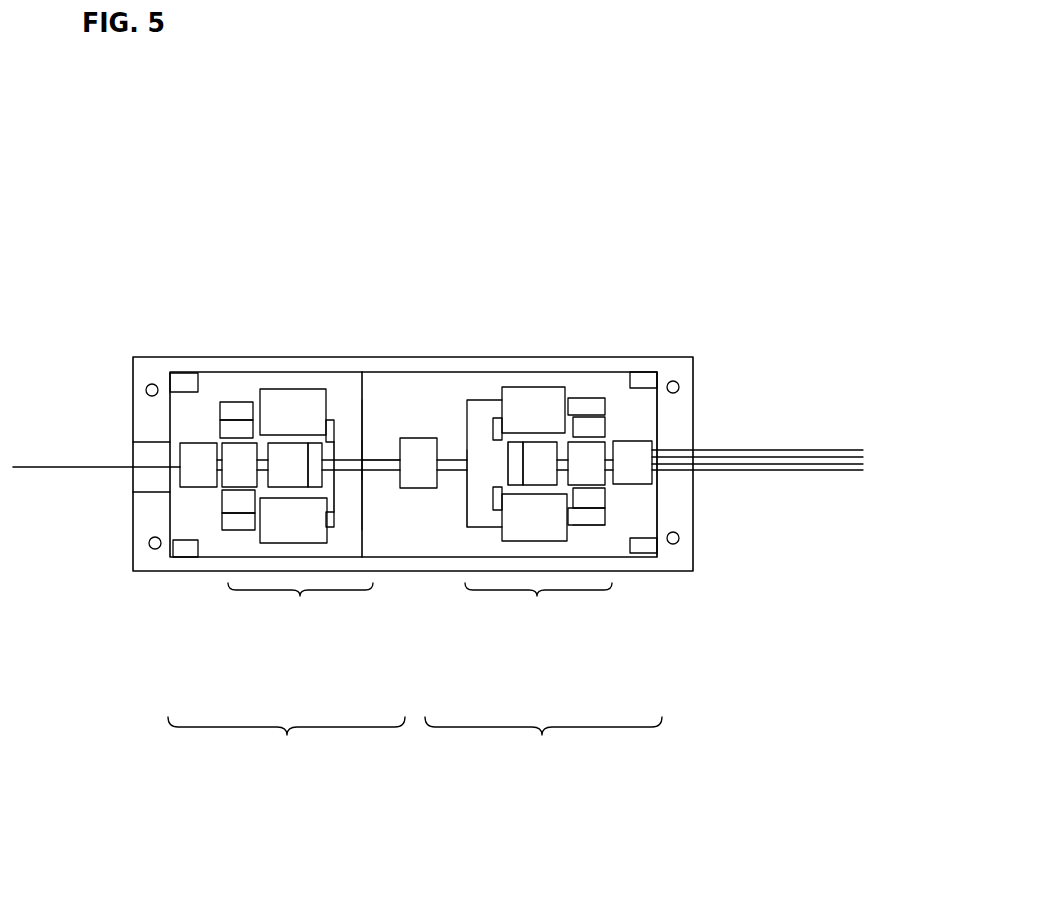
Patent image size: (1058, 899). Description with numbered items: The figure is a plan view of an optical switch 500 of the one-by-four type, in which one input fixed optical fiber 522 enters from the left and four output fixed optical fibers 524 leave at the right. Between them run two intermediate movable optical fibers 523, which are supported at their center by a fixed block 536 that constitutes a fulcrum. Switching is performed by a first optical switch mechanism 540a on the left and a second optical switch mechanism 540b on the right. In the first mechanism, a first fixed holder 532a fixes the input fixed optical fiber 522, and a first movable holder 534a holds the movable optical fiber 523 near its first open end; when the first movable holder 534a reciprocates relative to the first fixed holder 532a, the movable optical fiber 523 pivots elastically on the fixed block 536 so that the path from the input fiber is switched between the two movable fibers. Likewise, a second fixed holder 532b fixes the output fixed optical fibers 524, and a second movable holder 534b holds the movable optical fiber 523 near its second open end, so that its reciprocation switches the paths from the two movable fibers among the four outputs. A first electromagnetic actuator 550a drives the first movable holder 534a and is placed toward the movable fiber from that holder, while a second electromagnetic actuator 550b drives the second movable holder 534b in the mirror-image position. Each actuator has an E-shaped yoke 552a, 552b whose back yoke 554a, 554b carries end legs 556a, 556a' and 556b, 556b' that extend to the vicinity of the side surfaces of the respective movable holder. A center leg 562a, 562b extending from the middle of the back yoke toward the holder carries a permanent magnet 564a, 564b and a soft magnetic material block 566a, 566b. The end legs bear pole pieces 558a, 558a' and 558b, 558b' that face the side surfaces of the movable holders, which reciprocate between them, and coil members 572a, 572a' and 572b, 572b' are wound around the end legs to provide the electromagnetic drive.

The optical switch 500 is at (153, 192).
The input fixed optical fiber 522 is at (80, 472).
The movable optical fiber 523 is at (440, 452).
The output fixed optical fiber 524 is at (792, 464).
The first fixed holder 532a is at (178, 436).
The second fixed holder 532b is at (712, 372).
The first movable holder 534a is at (237, 462).
The second movable holder 534b is at (647, 453).
The fixed block 536 is at (422, 480).
The first optical switch mechanism 540a is at (286, 741).
The second optical switch mechanism 540b is at (543, 740).
The first electromagnetic actuator 550a is at (300, 602).
The second electromagnetic actuator 550b is at (538, 602).
The E-shaped yoke 552a is at (368, 478).
The E-shaped yoke 552b is at (465, 483).
The back yoke 554a is at (340, 470).
The back yoke 554b is at (500, 470).
The end leg 556a is at (328, 386).
The end leg 556a' is at (197, 614).
The end leg 556b is at (602, 383).
The end leg 556b' is at (646, 578).
The pole piece 558a is at (249, 383).
The pole piece 558a' is at (156, 577).
The pole piece 558b is at (600, 339).
The pole piece 558b' is at (688, 590).
The center leg 562a is at (332, 470).
The center leg 562b is at (456, 452).
The permanent magnet 564a is at (310, 460).
The permanent magnet 564b is at (465, 400).
The soft magnetic material block 566a is at (290, 456).
The soft magnetic material block 566b is at (530, 460).
The coil member 572a is at (281, 355).
The coil member 572a' is at (270, 601).
The coil member 572b is at (529, 368).
The coil member 572b' is at (574, 605).